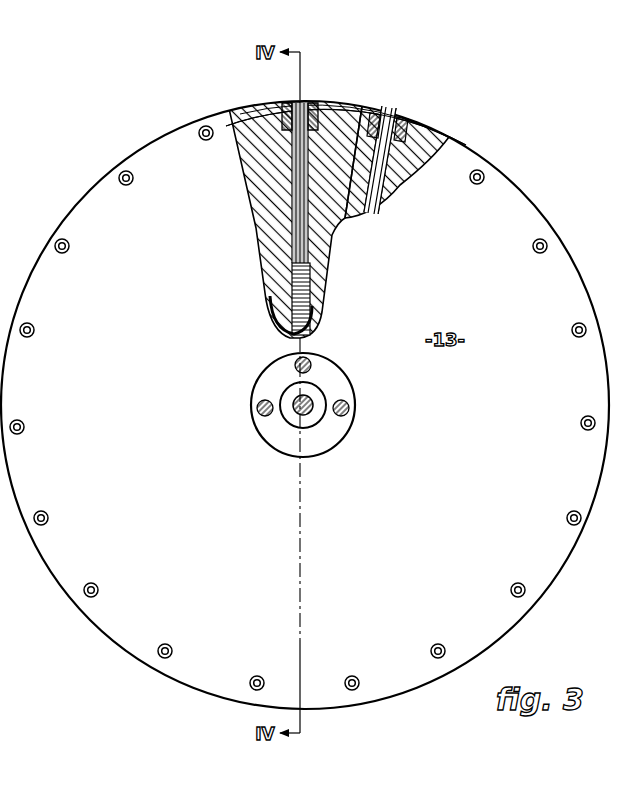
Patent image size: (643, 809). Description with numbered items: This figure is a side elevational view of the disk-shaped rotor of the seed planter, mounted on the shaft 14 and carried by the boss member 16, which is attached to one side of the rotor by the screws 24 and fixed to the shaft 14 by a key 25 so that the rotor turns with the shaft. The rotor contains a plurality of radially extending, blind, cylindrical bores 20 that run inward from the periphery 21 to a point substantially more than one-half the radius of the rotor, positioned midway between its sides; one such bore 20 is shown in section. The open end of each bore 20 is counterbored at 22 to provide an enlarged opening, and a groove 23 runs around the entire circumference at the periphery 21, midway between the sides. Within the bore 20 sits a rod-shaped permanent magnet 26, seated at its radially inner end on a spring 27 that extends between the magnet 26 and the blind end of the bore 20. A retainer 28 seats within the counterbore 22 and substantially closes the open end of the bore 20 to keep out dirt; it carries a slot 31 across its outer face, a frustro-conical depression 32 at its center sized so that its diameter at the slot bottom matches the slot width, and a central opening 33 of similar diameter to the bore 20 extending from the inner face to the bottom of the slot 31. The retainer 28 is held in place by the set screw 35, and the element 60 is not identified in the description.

The shaft 14 is at (312, 402).
The boss member 16 is at (325, 440).
The bore 20 is at (388, 182).
The periphery 21 is at (512, 176).
The counterbore 22 is at (427, 127).
The groove 23 is at (447, 138).
The screw 24 is at (349, 410).
The key 25 is at (300, 400).
The permanent magnet 26 is at (355, 104).
The spring 27 is at (318, 314).
The retainer 28 is at (378, 112).
The slot 31 is at (387, 115).
The frustro-conical depression 32 is at (397, 117).
The central opening 33 is at (262, 100).
The set screw 35 is at (548, 243).
The socket 60 is at (292, 332).